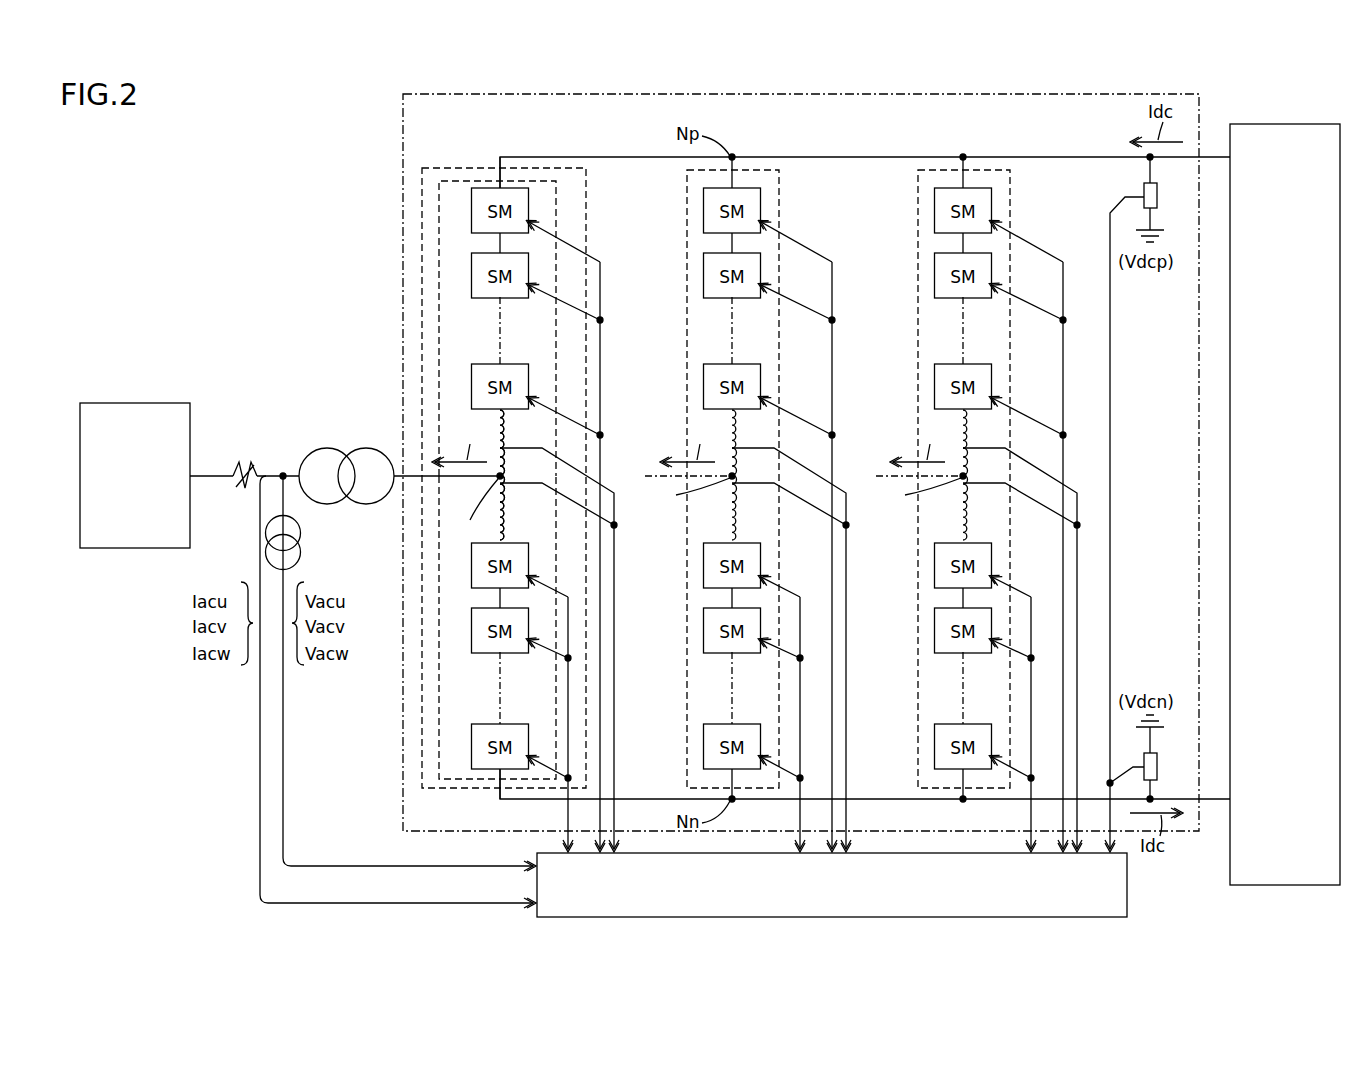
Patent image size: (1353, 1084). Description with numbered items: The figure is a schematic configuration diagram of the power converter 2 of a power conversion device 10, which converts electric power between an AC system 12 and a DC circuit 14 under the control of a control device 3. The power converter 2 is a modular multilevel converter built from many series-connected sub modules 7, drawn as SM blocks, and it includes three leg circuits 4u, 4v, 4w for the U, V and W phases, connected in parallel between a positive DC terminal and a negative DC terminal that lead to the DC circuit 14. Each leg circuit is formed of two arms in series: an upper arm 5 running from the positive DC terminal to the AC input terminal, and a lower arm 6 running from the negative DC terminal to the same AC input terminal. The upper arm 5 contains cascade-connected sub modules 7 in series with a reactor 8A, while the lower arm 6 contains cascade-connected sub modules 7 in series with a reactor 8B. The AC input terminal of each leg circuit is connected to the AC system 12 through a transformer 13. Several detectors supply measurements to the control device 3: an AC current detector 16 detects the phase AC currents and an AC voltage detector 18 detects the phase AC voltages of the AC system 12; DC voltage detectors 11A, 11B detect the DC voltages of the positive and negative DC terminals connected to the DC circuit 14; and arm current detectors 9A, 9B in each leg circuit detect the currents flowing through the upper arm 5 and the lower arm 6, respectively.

The power converter 2 is at (400, 141).
The control device 3 is at (1128, 886).
The leg circuit 4u is at (443, 167).
The leg circuit 4v is at (766, 169).
The leg circuit 4w is at (996, 169).
The upper arm 5 is at (438, 318).
The lower arm 6 is at (438, 690).
The sub module 7 is at (471, 213).
The reactor 8A is at (507, 433).
The reactor 8B is at (507, 526).
The arm current detector 9A is at (506, 462).
The arm current detector 9B is at (506, 492).
The power conversion device 10 is at (350, 184).
The DC voltage detector 11A is at (1157, 197).
The DC voltage detector 11B is at (1157, 767).
The AC system 12 is at (135, 403).
The transformer 13 is at (325, 450).
The DC circuit 14 is at (1282, 124).
The AC current detector 16 is at (238, 468).
The AC voltage detector 18 is at (302, 536).